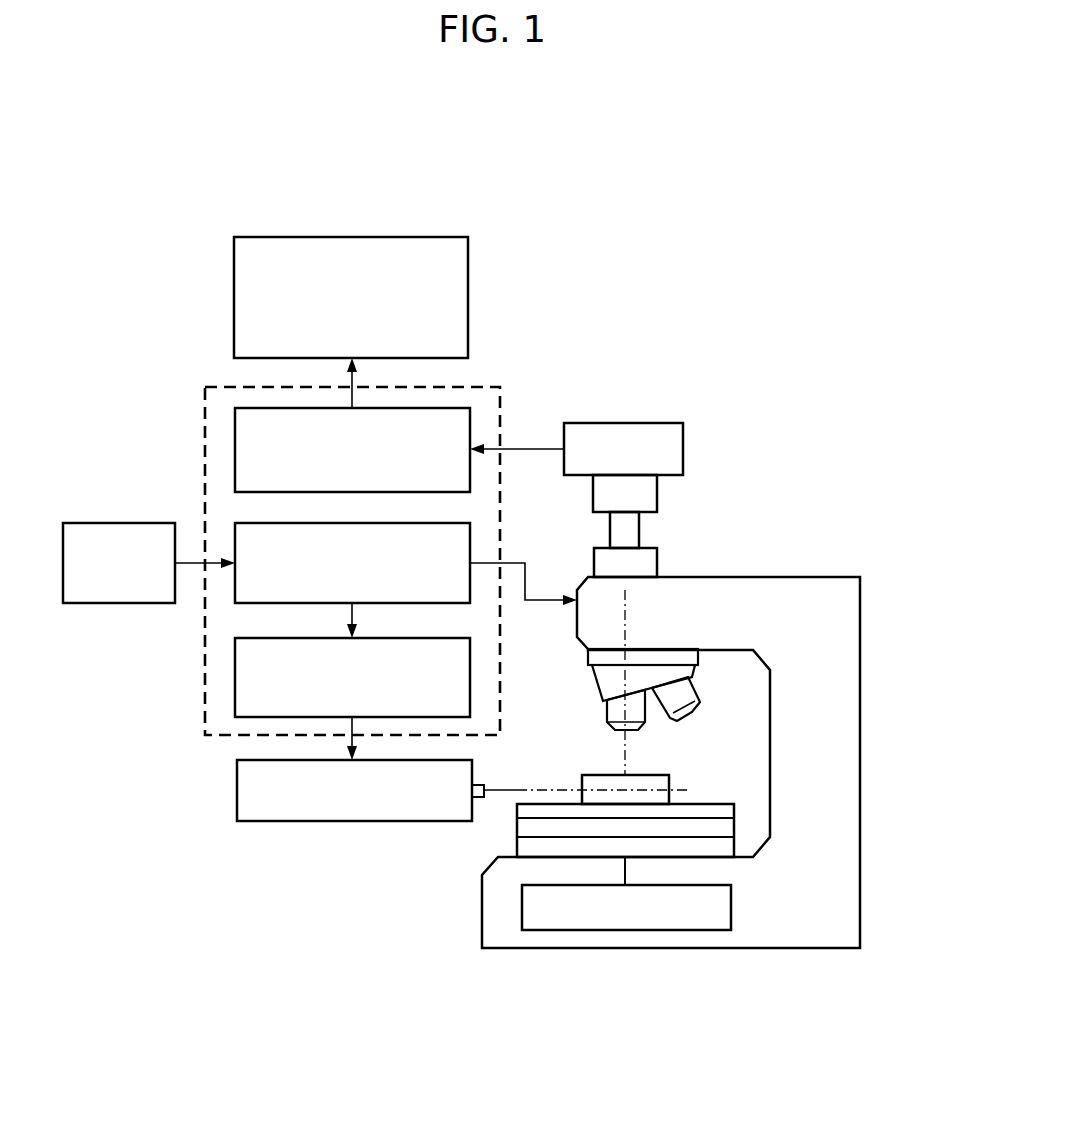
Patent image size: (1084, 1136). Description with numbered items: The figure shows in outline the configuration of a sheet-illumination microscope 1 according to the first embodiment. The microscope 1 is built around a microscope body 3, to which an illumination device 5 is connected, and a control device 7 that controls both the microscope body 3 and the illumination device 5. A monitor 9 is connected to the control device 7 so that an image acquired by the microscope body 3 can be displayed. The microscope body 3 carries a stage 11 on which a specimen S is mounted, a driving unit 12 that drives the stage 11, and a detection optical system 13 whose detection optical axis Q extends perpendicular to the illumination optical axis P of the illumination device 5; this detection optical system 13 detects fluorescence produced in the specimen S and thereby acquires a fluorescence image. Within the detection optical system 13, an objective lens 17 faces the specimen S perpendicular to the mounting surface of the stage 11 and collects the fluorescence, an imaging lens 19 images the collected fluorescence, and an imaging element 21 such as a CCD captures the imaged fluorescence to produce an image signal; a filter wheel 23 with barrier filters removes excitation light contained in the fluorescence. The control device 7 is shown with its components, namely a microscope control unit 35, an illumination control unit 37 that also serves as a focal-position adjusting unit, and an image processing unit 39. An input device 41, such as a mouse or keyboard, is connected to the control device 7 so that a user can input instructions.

The microscope 1 is at (728, 178).
The microscope body 3 is at (880, 711).
The illumination device 5 is at (237, 788).
The control device 7 is at (205, 403).
The monitor 9 is at (374, 237).
The stage 11 is at (517, 830).
The driving unit 12 is at (613, 931).
The detection optical system 13 is at (701, 500).
The objective lens 17 is at (606, 714).
The imaging lens 19 is at (639, 527).
The imaging element 21 is at (683, 440).
The filter wheel 23 is at (657, 560).
The microscope control unit 35 is at (470, 549).
The illumination control unit 37 is at (235, 672).
The image processing unit 39 is at (235, 447).
The input device 41 is at (98, 604).
The illumination optical axis P is at (517, 790).
The detection optical axis Q is at (620, 758).
The specimen S is at (669, 778).